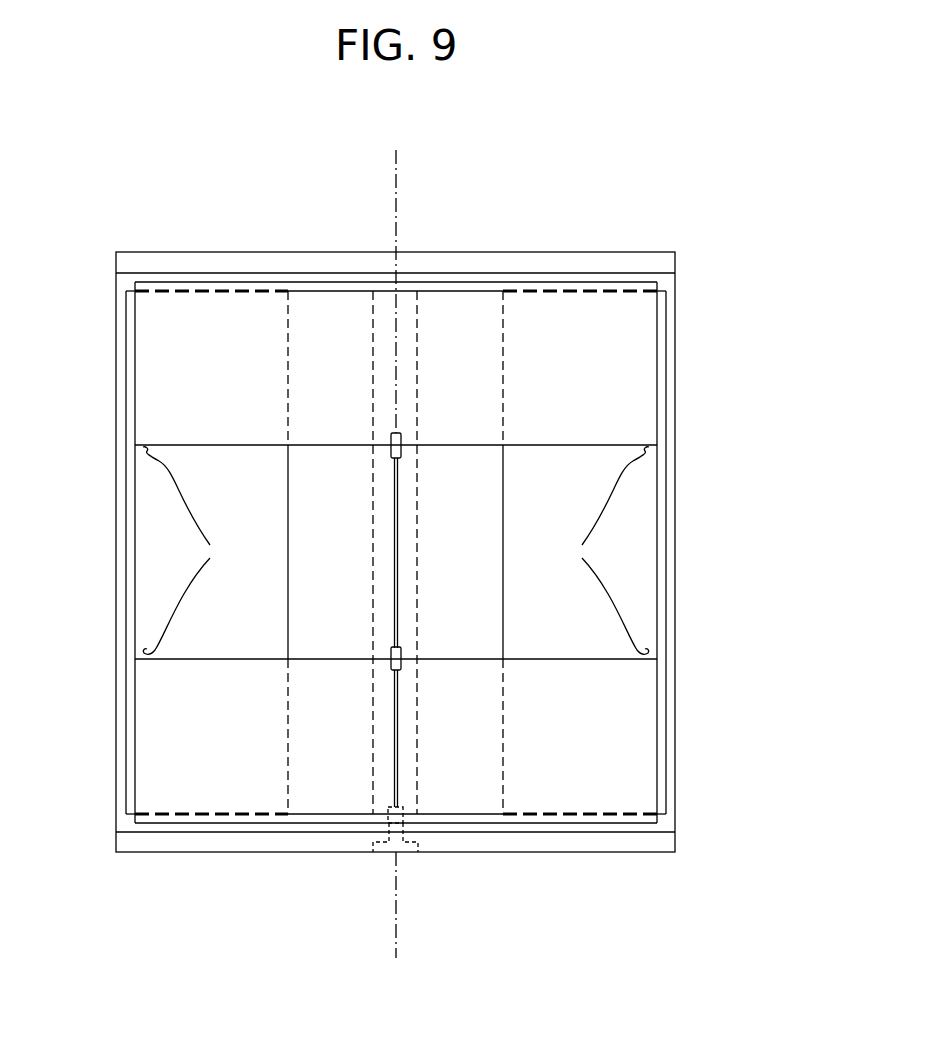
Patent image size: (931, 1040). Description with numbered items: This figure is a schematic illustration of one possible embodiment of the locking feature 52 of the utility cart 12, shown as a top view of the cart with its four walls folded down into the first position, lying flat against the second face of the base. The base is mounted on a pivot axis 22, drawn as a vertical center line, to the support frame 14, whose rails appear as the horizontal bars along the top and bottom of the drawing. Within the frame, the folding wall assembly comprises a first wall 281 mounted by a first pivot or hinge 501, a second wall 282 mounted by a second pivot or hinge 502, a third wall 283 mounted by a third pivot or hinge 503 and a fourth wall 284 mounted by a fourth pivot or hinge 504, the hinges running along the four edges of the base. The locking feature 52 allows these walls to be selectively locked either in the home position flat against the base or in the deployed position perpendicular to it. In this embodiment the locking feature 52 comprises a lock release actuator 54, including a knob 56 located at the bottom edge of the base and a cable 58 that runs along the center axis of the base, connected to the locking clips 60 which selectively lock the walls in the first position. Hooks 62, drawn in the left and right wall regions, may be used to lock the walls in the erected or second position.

The utility cart 12 is at (722, 324).
The support frame 14 is at (551, 262).
The pivot axis 22 is at (393, 950).
The first wall 281 is at (317, 447).
The second wall 282 is at (502, 533).
The third wall 283 is at (465, 658).
The fourth wall 284 is at (290, 650).
The first pivot or hinge 501 is at (347, 290).
The second pivot or hinge 502 is at (663, 553).
The third pivot or hinge 503 is at (300, 822).
The fourth pivot or hinge 504 is at (128, 604).
The locking feature 52 is at (310, 872).
The lock release actuator 54 is at (419, 865).
The knob 56 is at (378, 852).
The cable 58 is at (395, 578).
The locking clips 60 is at (396, 432).
The hooks 62 is at (396, 550).